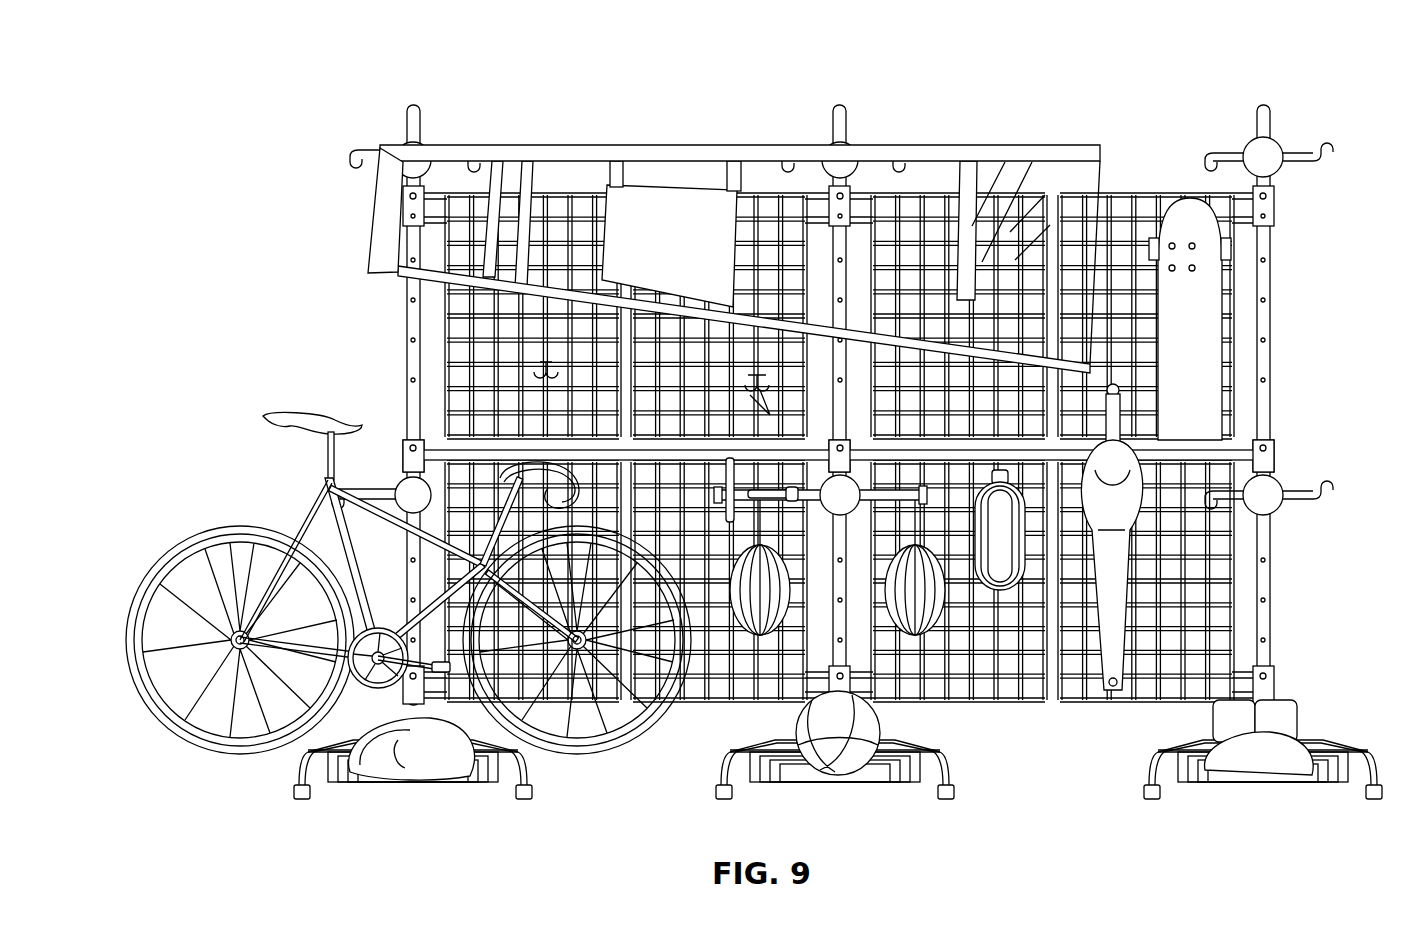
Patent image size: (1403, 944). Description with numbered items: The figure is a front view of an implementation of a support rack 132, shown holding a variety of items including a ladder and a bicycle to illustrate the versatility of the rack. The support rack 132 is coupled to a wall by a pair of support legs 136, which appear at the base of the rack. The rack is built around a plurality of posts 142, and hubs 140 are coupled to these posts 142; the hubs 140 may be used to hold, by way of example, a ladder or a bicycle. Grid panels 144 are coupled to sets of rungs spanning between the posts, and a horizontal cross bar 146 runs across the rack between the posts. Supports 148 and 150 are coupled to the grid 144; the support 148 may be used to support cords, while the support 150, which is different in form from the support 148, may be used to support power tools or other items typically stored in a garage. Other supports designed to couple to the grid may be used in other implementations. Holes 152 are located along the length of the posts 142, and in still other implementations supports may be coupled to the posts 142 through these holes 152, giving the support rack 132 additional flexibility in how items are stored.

The support rack 132 is at (1300, 62).
The hubs 140 is at (421, 148).
The plurality of posts 142 is at (407, 322).
The holes 152 is at (407, 362).
The support 148 is at (1002, 468).
The support 150 is at (1116, 400).
The horizontal cross bar 146 is at (1225, 455).
The wire grid panel 144 is at (1210, 618).
The support legs 136 is at (945, 775).